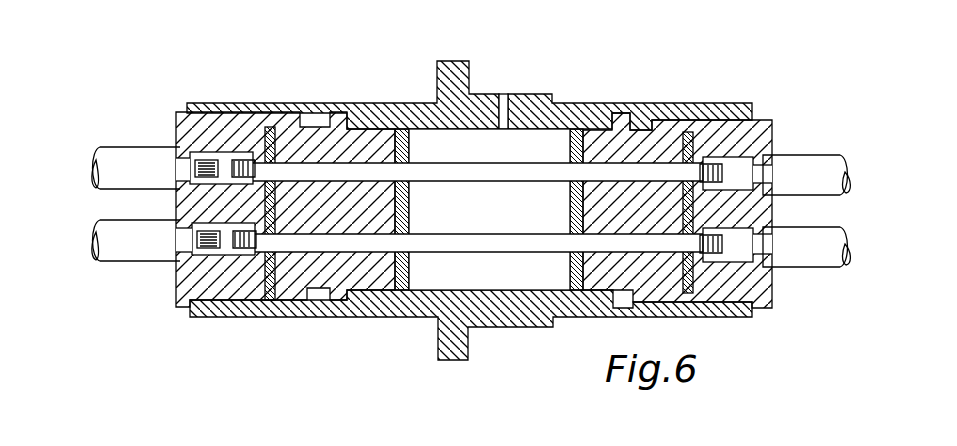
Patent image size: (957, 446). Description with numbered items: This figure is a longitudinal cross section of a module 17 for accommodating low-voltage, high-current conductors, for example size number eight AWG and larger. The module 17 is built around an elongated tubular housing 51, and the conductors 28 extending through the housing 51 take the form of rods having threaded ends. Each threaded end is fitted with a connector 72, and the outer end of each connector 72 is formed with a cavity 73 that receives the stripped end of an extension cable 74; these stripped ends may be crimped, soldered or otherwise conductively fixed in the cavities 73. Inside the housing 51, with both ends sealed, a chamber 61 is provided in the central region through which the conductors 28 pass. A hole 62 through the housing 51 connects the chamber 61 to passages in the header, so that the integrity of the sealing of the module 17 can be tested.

The module 17 is at (343, 87).
The conductors 28 is at (368, 288).
The elongated tubular housing 51 is at (625, 107).
The chamber 61 is at (498, 278).
The hole 62 is at (505, 96).
The connectors 72 is at (248, 256).
The cavities 73 is at (212, 256).
The extension cables 74 is at (97, 258).